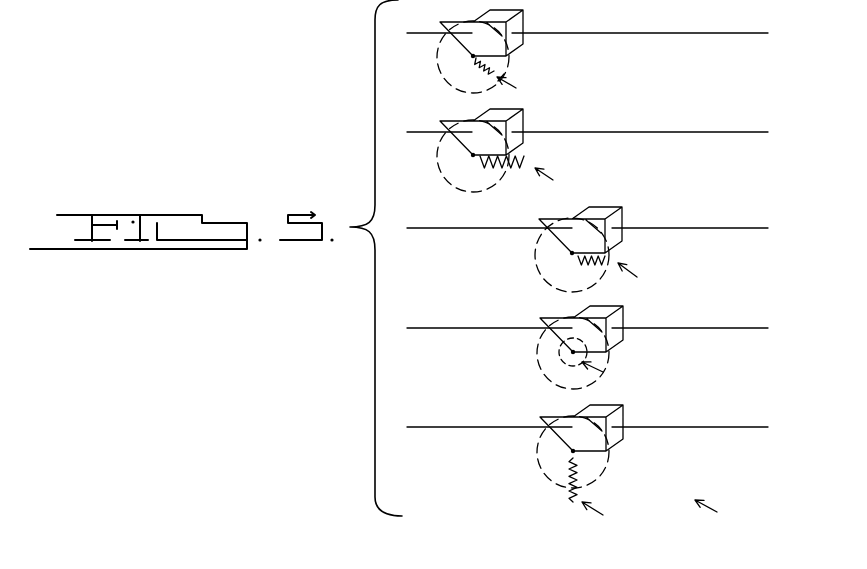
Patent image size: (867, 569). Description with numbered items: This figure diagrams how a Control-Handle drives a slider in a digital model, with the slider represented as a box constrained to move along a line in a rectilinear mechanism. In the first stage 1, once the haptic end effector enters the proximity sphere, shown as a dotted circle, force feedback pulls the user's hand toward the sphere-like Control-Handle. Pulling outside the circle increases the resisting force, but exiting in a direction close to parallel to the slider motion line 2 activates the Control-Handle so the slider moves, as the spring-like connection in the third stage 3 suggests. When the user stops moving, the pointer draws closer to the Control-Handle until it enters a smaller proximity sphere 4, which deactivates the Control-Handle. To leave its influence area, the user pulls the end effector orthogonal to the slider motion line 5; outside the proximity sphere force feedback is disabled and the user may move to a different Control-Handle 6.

The first loading case (point force at corner) 1 is at (587, 49).
The slider motion line 2 is at (584, 148).
The third loading case (short horizontal spring) 3 is at (584, 247).
The smaller proximity sphere 4 is at (584, 346).
The slider motion line 5 is at (584, 457).
The Control-Handle 6 is at (696, 497).